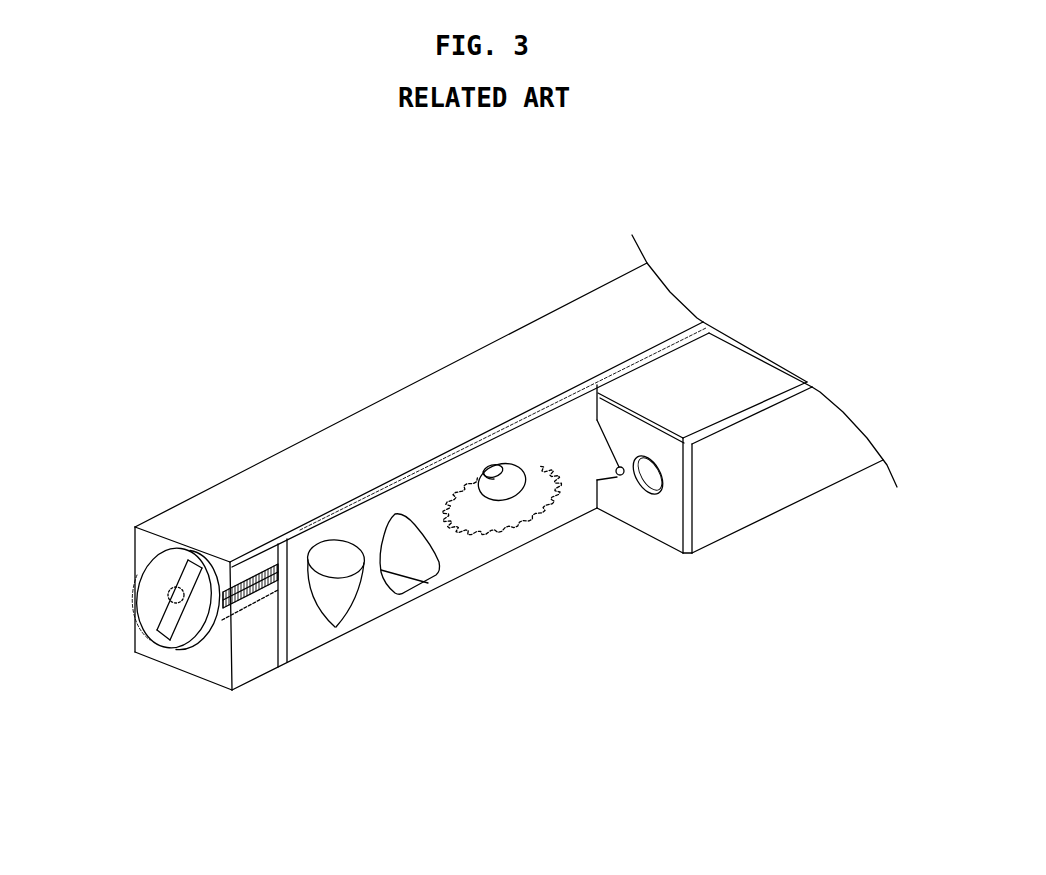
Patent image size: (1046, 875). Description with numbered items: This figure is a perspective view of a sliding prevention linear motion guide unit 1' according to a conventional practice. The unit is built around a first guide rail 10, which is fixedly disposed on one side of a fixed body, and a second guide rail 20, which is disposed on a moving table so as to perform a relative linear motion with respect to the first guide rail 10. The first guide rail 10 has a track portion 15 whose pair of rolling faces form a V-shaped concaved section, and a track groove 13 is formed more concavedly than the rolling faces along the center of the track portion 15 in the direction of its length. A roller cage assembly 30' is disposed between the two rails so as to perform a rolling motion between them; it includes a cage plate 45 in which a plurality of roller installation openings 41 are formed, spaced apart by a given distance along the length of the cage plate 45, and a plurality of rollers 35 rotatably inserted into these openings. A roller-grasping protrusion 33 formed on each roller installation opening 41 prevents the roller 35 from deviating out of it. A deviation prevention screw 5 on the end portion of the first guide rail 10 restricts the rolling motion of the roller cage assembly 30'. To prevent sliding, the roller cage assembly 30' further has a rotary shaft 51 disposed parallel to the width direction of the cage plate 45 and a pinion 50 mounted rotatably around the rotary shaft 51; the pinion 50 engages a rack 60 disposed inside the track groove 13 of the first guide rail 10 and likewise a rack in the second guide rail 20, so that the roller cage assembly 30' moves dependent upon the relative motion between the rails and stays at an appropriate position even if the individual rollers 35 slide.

The sliding prevention linear motion guide unit 1' is at (764, 345).
The first guide rail 10 is at (370, 429).
The second guide rail 20 is at (832, 431).
The deviation prevention screw 5 is at (150, 587).
The rack 60 is at (231, 608).
The track groove 13 is at (257, 585).
The track portion 15 is at (253, 637).
The roller-grasping protrusion 33 is at (330, 547).
The roller 35 is at (331, 632).
The roller installation opening 41 is at (428, 580).
The cage plate 45 is at (375, 598).
The pinion 50 is at (500, 497).
The rotary shaft 51 is at (511, 489).
The roller cage assembly 30' is at (601, 496).